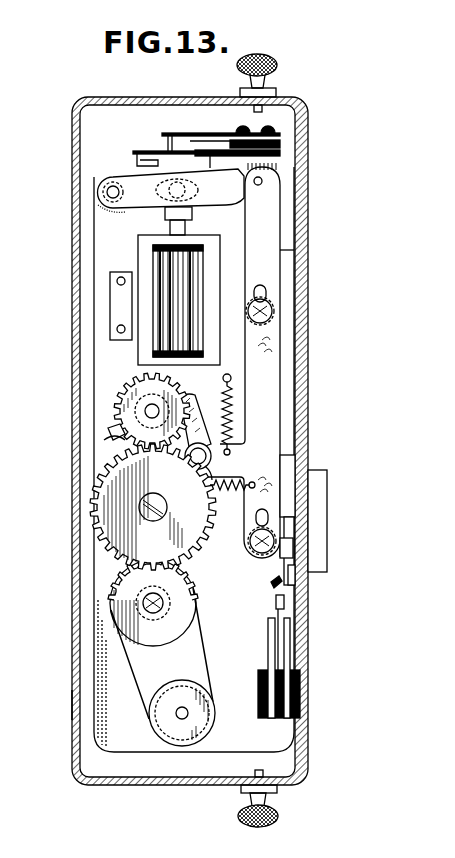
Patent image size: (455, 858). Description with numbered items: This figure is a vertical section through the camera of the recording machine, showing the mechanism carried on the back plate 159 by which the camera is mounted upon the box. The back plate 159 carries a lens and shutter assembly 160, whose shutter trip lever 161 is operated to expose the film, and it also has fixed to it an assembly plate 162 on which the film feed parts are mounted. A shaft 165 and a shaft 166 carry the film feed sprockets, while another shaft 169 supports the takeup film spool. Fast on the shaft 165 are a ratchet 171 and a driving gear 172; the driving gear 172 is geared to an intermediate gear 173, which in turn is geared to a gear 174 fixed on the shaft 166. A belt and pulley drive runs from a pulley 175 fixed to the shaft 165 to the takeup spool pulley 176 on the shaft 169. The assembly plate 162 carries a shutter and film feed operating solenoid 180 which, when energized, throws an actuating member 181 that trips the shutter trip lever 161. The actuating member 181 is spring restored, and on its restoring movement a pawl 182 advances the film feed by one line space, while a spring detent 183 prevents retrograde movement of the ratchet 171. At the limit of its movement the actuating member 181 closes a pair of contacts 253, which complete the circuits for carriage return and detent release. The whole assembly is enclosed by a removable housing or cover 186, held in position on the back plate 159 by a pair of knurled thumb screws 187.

The back plate 159 is at (309, 316).
The lens and shutter assembly 160 is at (318, 488).
The shutter trip lever 161 is at (287, 548).
The assembly plate 162 is at (194, 459).
The shaft 165 is at (150, 411).
The shaft 166 is at (162, 605).
The shaft 169 is at (176, 713).
The ratchet 171 is at (117, 432).
The driving gear 172 is at (122, 440).
The intermediate gear 173 is at (127, 500).
The gear 174 is at (118, 580).
The pulley 175 is at (173, 628).
The takeup spool pulley 176 is at (205, 712).
The shutter and film feed operating solenoid 180 is at (178, 267).
The actuating member 181 is at (273, 373).
The pawl 182 is at (200, 407).
The spring detent 183 is at (112, 348).
The removable housing or cover 186 is at (72, 693).
The knurled thumb screws 187 is at (269, 63).
The contacts 253 is at (283, 613).